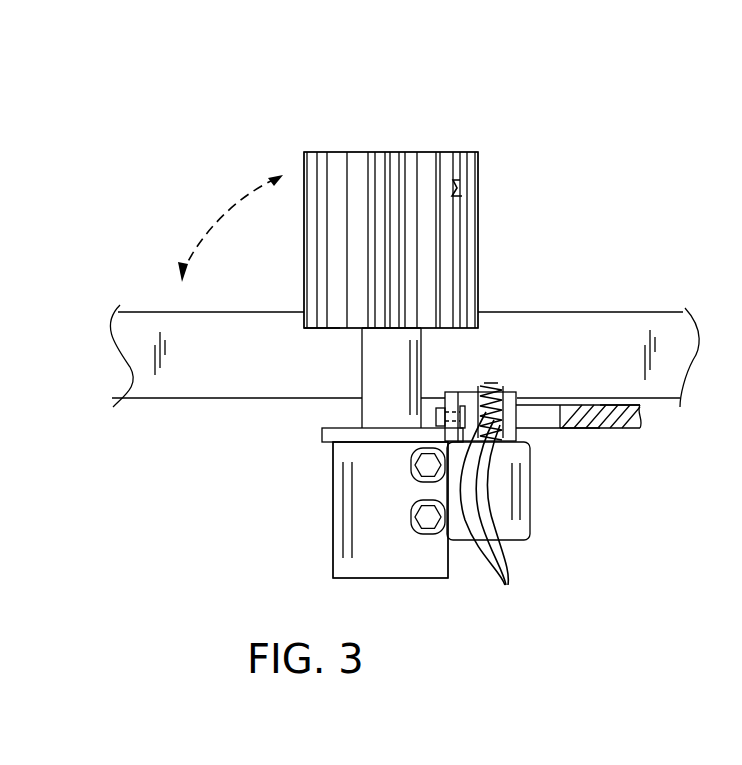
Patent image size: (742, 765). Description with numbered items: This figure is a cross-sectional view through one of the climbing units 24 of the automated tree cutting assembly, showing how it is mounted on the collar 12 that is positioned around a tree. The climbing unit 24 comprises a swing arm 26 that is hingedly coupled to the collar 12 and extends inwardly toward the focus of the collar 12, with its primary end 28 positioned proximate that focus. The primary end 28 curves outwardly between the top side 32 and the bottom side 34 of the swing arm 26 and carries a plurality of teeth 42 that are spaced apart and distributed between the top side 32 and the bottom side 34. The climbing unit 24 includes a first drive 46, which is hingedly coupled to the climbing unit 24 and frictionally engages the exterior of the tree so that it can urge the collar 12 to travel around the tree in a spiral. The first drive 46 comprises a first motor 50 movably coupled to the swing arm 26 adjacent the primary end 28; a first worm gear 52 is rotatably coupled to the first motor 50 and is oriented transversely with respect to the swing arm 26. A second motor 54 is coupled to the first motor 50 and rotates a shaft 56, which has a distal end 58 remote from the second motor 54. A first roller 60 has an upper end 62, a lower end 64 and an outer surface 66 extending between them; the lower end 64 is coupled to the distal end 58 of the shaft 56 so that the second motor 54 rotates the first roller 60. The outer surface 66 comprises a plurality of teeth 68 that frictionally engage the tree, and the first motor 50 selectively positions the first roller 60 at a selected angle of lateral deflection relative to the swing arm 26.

The collar 12 is at (145, 312).
The climbing unit 24 is at (477, 145).
The swing arm 26 is at (613, 428).
The primary end 28 is at (512, 392).
The top side 32 is at (593, 405).
The bottom side 34 is at (577, 428).
The teeth 42 is at (493, 521).
The first drive 46 is at (332, 480).
The first motor 50 is at (520, 540).
The first worm gear 52 is at (482, 387).
The second motor 54 is at (332, 535).
The shaft 56 is at (362, 372).
The distal end 58 is at (388, 328).
The first roller 60 is at (303, 153).
The upper end 62 is at (375, 153).
The lower end 64 is at (323, 325).
The outer surface 66 is at (460, 190).
The teeth 68 is at (460, 153).